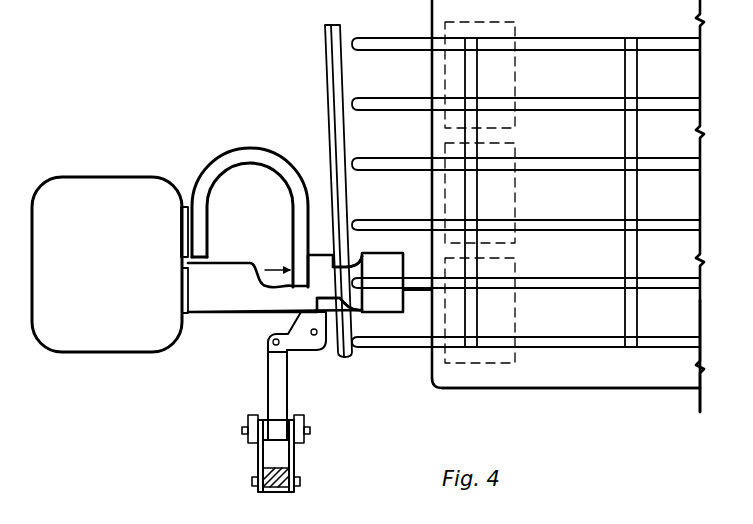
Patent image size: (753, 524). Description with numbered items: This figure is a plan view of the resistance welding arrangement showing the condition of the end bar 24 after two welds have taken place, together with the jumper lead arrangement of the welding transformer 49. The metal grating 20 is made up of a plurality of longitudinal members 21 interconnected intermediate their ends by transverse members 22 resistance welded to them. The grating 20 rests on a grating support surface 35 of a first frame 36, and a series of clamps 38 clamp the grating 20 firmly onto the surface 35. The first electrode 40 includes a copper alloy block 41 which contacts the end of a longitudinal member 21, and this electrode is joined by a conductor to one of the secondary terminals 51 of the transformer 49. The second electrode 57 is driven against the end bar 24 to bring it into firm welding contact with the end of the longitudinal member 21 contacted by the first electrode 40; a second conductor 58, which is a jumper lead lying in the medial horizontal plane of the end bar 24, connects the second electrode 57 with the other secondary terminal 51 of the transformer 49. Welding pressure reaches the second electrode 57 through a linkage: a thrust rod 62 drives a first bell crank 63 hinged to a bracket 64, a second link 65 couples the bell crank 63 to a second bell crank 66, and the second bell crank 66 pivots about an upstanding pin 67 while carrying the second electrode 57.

The metal grating 20 is at (581, 346).
The longitudinal members 21 is at (576, 42).
The transverse members 22 is at (622, 312).
The end bar 24 is at (332, 74).
The grating support surface 35 is at (655, 382).
The first frame 36 is at (657, 402).
The clamps 38 is at (480, 366).
The first electrode 40 is at (372, 318).
The copper alloy block 41 is at (393, 291).
The welding transformer 49 is at (114, 262).
The secondary terminals 51 is at (186, 206).
The second electrode 57 is at (322, 256).
The second conductor 58 is at (218, 160).
The thrust rod 62 is at (270, 487).
The first bell crank 63 is at (257, 455).
The bracket 64 is at (249, 423).
The second link 65 is at (278, 398).
The second bell crank 66 is at (292, 340).
The upstanding pin 67 is at (316, 337).